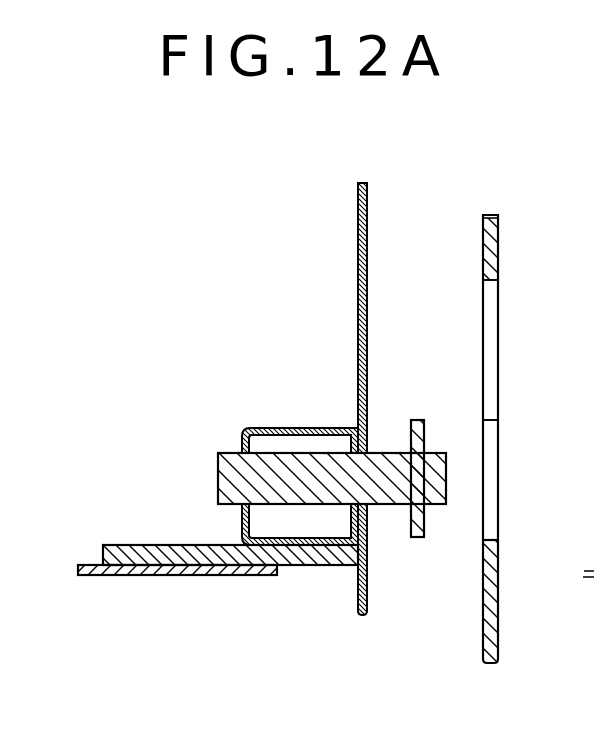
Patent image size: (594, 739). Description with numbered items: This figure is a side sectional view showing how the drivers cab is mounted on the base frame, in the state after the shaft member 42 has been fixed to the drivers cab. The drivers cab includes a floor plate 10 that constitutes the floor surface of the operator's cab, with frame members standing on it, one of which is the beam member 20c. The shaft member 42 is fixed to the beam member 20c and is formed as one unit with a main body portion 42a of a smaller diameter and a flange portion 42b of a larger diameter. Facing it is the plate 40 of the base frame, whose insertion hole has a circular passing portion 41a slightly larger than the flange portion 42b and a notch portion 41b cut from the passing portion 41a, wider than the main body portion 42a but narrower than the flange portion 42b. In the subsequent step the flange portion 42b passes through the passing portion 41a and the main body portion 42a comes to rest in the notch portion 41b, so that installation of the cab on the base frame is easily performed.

The floor plate 10 is at (148, 577).
The beam member 20c is at (312, 428).
The plate 40 is at (493, 213).
The passing portion 41a is at (497, 477).
The notch portion 41b is at (497, 358).
The shaft member 42 is at (267, 445).
The main body portion 42a is at (218, 482).
The flange portion 42b is at (415, 420).